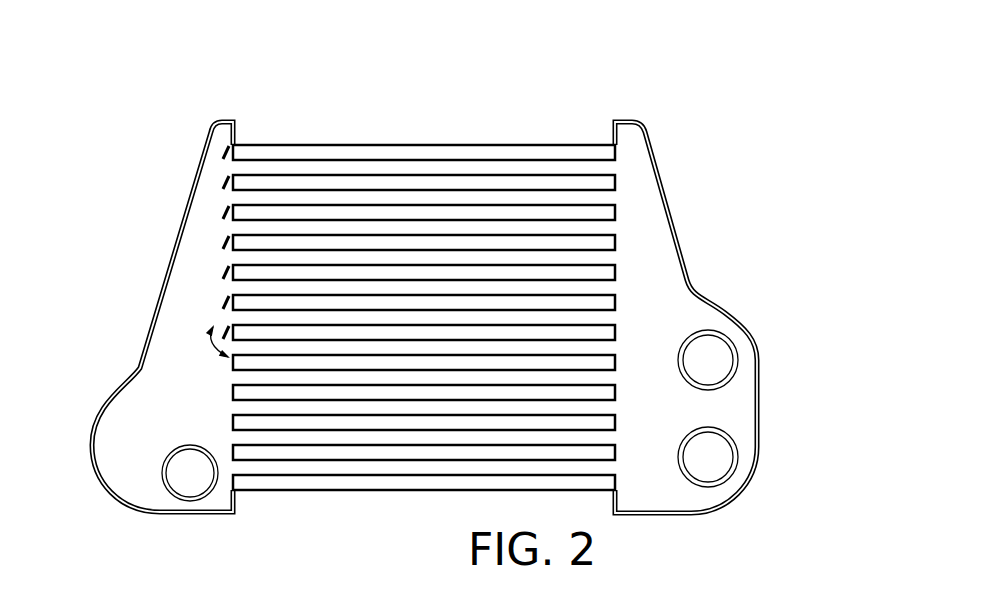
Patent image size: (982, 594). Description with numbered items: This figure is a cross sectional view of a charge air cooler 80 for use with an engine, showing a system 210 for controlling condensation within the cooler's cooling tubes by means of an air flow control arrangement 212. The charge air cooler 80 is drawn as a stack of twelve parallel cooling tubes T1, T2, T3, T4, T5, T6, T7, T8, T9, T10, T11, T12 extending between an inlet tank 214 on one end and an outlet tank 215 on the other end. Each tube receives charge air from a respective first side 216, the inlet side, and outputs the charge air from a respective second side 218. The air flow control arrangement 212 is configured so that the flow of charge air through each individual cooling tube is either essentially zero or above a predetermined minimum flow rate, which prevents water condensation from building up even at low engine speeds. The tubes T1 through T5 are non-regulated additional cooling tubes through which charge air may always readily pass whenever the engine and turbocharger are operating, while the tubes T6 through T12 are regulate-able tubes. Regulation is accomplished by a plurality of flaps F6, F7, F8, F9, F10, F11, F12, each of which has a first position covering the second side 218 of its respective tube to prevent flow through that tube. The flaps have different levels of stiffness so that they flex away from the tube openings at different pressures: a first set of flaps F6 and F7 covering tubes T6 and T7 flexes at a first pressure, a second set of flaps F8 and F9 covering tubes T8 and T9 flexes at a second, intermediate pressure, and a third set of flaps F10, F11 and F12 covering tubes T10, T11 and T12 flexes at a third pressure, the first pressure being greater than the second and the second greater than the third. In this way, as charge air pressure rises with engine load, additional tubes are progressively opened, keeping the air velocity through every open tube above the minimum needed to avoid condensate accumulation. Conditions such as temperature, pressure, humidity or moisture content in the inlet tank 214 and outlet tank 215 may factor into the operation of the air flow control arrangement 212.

The charge air cooler 80 is at (752, 65).
The system 210 is at (599, 77).
The air flow control arrangement 212 is at (122, 98).
The inlet tank 214 is at (672, 228).
The outlet tank 215 is at (117, 382).
The first side 216 is at (613, 150).
The second side 218 is at (230, 152).
The cooling tube T1 is at (252, 488).
The cooling tube T2 is at (294, 457).
The cooling tube T3 is at (347, 428).
The cooling tube T4 is at (373, 398).
The cooling tube T5 is at (422, 368).
The cooling tube T6 is at (258, 325).
The cooling tube T7 is at (292, 297).
The cooling tube T8 is at (350, 268).
The cooling tube T9 is at (385, 240).
The cooling tube T10 is at (427, 215).
The cooling tube T11 is at (470, 185).
The cooling tube T12 is at (520, 150).
The flap F6 is at (227, 327).
The flap F7 is at (227, 297).
The flap F8 is at (227, 267).
The flap F9 is at (227, 237).
The flap F10 is at (227, 207).
The flap F11 is at (227, 177).
The flap F12 is at (227, 147).